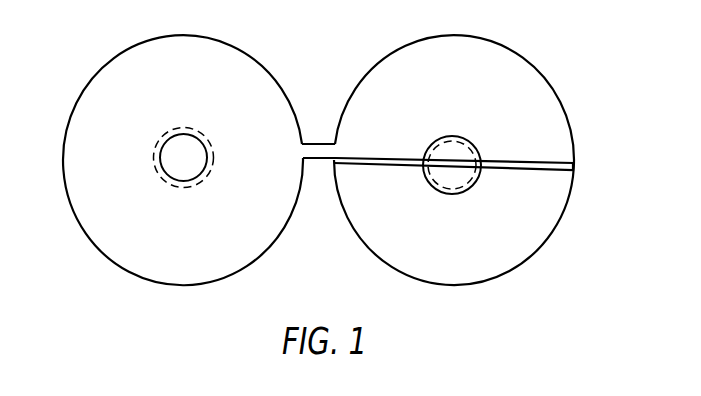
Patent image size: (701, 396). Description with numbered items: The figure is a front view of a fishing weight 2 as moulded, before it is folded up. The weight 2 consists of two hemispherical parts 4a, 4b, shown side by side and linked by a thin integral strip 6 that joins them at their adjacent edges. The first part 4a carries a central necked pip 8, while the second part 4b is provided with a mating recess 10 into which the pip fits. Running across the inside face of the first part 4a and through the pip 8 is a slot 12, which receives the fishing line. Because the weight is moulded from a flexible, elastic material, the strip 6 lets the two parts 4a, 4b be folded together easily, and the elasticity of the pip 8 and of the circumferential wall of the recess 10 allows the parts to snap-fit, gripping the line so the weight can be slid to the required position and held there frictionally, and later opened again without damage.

The fishing weight 2 is at (546, 53).
The first hemispherical part 4a is at (450, 273).
The second hemispherical part 4b is at (223, 250).
The integral strip 6 is at (314, 152).
The central necked pip 8 is at (463, 152).
The mating recess 10 is at (198, 145).
The slot 12 is at (535, 172).